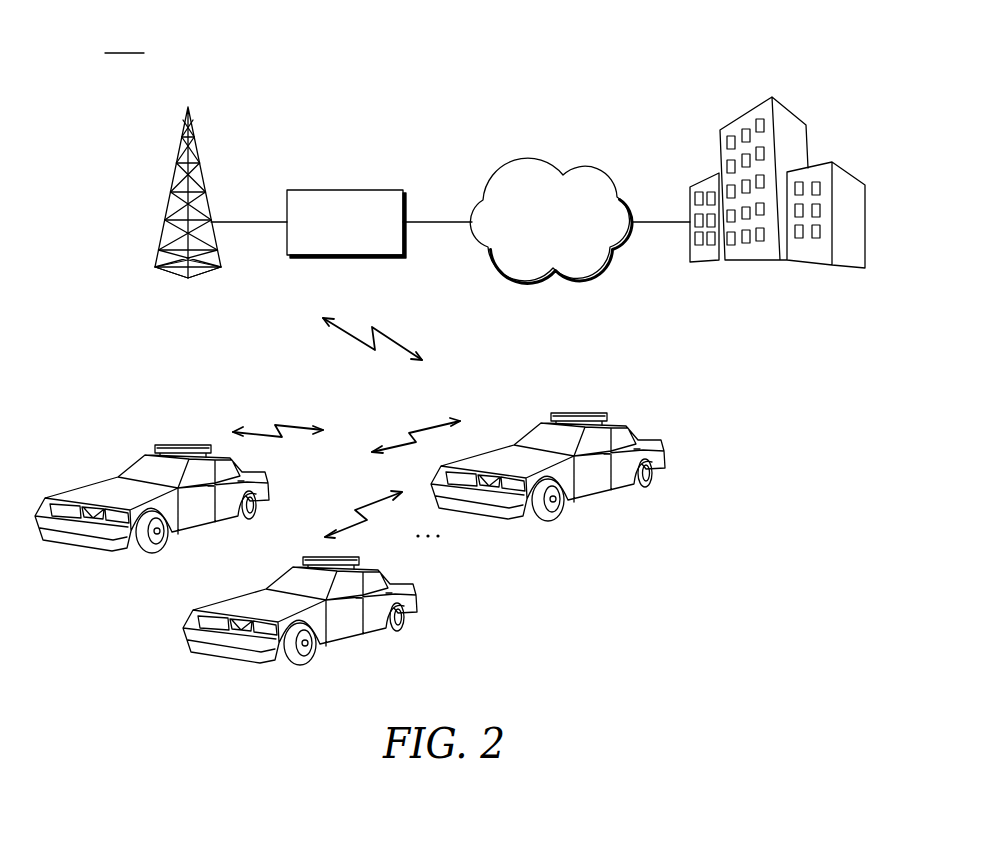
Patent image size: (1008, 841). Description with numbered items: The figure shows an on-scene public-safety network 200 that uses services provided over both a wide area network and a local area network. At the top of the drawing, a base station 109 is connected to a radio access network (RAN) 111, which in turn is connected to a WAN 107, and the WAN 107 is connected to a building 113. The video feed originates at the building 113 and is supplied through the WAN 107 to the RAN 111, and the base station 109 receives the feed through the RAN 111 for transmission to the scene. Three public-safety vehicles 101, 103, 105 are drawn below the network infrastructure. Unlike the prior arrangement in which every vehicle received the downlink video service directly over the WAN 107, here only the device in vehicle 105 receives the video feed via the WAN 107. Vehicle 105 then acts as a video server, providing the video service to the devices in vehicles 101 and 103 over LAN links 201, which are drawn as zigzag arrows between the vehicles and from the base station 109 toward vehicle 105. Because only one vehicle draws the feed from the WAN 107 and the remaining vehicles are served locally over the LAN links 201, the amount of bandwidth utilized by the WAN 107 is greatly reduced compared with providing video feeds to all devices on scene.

The on-scene public-safety network 200 is at (124, 42).
The public-safety vehicle 101 is at (138, 462).
The public-safety vehicle 103 is at (286, 575).
The public-safety vehicle 105 is at (534, 430).
The WAN 107 is at (502, 183).
The base station 109 is at (175, 177).
The radio access network (RAN) 111 is at (318, 189).
The building 113 is at (745, 110).
The LAN links 201 is at (290, 428).